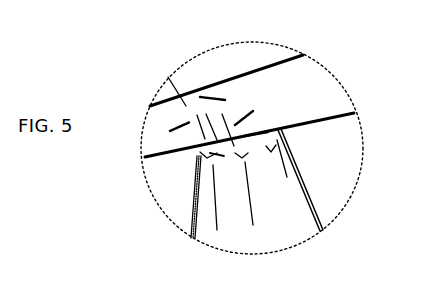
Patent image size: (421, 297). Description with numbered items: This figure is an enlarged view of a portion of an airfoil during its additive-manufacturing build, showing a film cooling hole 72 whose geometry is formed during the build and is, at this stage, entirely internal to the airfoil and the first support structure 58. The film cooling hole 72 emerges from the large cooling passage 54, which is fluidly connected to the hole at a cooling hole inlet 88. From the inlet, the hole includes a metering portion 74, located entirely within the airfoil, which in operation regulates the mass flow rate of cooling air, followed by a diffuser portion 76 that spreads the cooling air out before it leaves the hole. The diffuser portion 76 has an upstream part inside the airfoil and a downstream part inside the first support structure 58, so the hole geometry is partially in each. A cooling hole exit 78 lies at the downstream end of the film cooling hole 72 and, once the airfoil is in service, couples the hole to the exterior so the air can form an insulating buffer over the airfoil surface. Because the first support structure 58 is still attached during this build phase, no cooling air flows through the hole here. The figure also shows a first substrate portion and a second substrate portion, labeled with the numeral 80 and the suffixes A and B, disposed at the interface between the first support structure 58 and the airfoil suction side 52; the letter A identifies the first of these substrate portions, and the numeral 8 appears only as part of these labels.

The airfoil suction side 52 is at (300, 123).
The large cooling passage 54 is at (203, 92).
The first support structure 58 is at (295, 235).
The film cooling hole 72 is at (172, 131).
The metering portion 74 is at (221, 116).
The diffuser portion 76 is at (248, 126).
The cooling hole exit 78 is at (238, 204).
The substrate portion 80 is at (239, 189).
The sensor 8 is at (296, 180).
The cooling hole inlet 88 is at (187, 108).
The region A is at (206, 230).